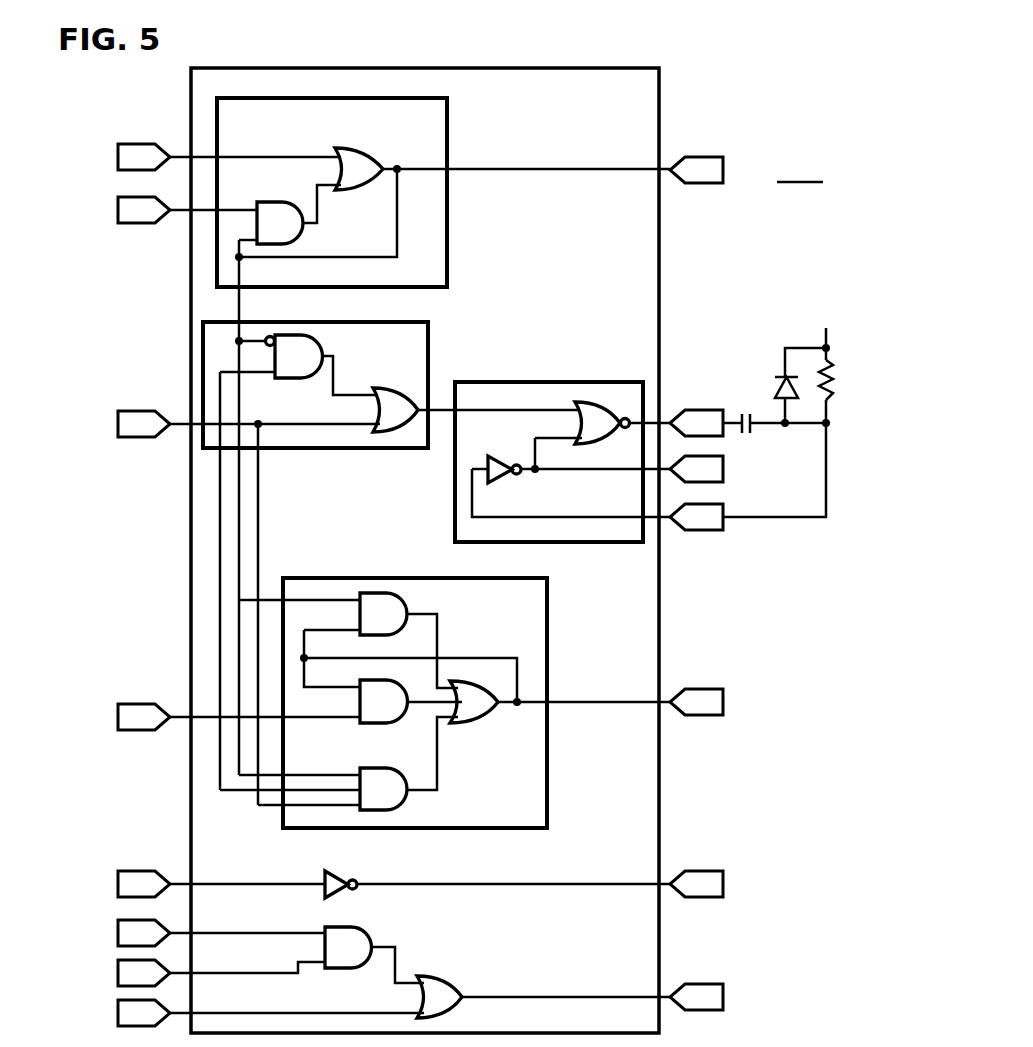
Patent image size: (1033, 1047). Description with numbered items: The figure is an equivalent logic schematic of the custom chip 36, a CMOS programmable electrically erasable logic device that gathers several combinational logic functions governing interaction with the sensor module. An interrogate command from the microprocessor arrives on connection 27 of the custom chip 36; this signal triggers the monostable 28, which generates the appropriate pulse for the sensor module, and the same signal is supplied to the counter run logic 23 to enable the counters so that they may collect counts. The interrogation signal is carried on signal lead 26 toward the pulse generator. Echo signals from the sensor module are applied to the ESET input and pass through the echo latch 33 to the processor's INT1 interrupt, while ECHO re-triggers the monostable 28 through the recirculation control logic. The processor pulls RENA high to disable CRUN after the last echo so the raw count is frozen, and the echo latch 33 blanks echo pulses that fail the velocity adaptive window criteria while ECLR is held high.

The custom chip 36 is at (540, 68).
The echo latch logic 33 is at (448, 132).
The signal lead 26 is at (180, 212).
The connection 27 is at (182, 423).
The counter run logic 23 is at (547, 622).
The monostable 28 is at (849, 325).